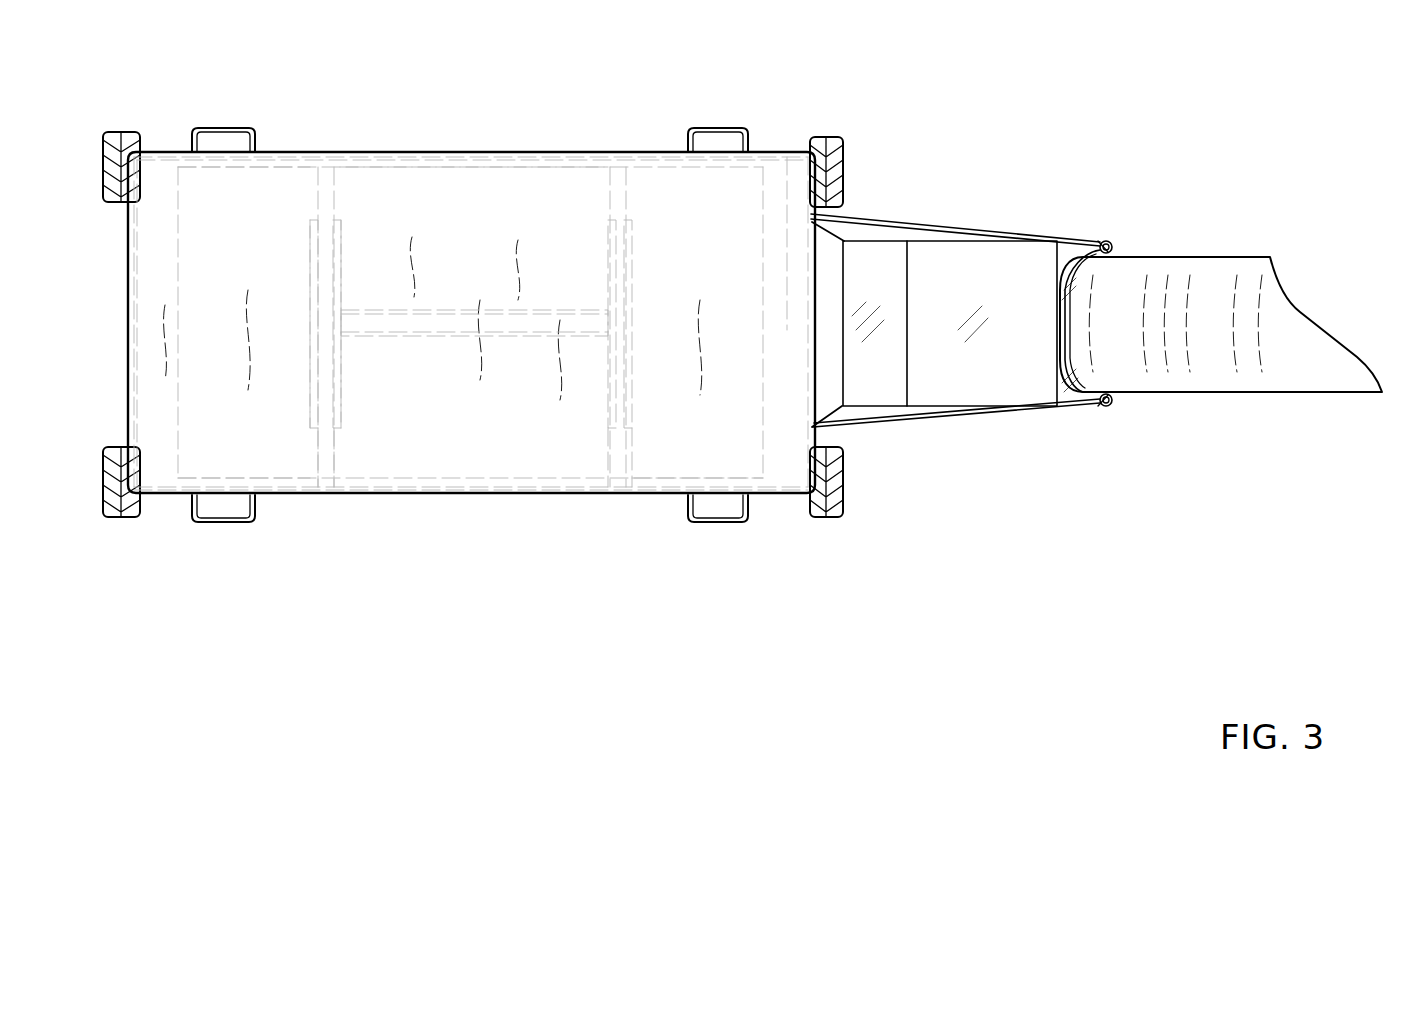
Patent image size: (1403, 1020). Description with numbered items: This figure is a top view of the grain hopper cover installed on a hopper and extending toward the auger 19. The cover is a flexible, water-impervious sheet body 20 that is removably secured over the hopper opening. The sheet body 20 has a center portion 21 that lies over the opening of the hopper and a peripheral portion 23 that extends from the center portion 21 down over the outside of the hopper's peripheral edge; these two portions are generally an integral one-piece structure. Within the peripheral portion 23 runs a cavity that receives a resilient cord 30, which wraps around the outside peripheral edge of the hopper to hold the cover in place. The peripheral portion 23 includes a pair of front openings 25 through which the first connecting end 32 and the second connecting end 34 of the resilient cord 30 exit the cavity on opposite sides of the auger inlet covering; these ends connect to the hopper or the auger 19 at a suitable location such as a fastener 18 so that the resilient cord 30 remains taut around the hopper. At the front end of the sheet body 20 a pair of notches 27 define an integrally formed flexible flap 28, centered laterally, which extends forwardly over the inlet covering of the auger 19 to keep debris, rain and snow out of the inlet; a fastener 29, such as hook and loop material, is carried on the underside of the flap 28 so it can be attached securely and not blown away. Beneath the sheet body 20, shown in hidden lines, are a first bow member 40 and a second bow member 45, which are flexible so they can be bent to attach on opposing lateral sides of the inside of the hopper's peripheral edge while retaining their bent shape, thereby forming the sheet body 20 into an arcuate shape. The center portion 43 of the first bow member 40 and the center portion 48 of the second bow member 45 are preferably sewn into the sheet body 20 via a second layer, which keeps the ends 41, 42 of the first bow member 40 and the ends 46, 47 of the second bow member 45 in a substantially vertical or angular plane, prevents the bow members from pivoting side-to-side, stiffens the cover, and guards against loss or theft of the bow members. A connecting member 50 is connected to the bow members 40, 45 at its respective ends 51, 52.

The fastener 18 is at (1102, 245).
The auger 19 is at (1228, 290).
The sheet body 20 is at (449, 153).
The center portion 21 is at (285, 323).
The peripheral portion 23 is at (487, 190).
The front openings 25 is at (817, 233).
The notches 27 is at (844, 241).
The flap 28 is at (815, 300).
The fastener 29 is at (800, 225).
The resilient cord 30 is at (962, 230).
The first connecting end 32 is at (1112, 400).
The second connecting end 34 is at (1108, 248).
The first bow member 40 is at (628, 463).
The end of first bow member 41 is at (586, 492).
The end of first bow member 42 is at (610, 182).
The center portion of first bow member 43 is at (653, 330).
The second bow member 45 is at (337, 452).
The end of second bow member 46 is at (300, 490).
The end of second bow member 47 is at (340, 182).
The center portion of second bow member 48 is at (300, 333).
The connecting member 50 is at (478, 490).
The end of connecting member 51 is at (598, 318).
The end of connecting member 52 is at (467, 333).